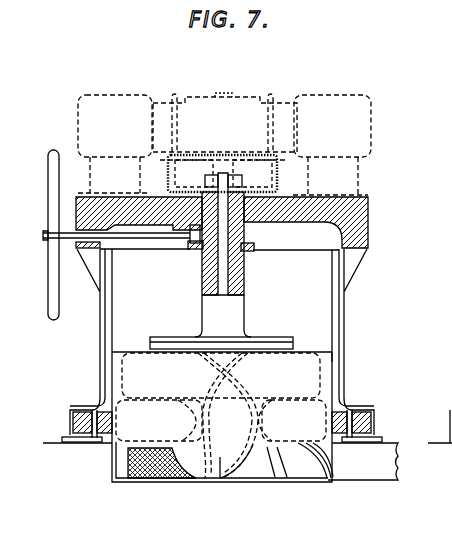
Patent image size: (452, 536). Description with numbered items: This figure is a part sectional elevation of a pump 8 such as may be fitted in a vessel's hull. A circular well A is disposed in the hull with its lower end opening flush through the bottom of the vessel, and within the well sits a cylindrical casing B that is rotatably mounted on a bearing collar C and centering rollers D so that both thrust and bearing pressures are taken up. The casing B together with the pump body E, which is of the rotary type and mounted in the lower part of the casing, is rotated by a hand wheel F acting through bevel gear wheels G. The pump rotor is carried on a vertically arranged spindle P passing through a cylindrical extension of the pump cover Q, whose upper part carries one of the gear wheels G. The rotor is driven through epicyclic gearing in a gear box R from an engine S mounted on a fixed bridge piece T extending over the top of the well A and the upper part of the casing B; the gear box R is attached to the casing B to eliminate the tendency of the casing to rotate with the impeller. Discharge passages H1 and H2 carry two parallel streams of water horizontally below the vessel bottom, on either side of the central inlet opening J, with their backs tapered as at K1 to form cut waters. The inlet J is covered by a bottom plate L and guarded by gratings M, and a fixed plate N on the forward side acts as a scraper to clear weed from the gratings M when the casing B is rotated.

The pump unit / ball member 8 is at (220, 93).
The engine S is at (364, 131).
The gear box R is at (185, 163).
The bearing collar C is at (262, 194).
The bridge piece T is at (368, 210).
The hand wheel F is at (55, 182).
The spindle P is at (202, 292).
The pump cover Q is at (205, 317).
The bevel gear wheels G is at (242, 247).
The cylindrical casing B is at (333, 302).
The well A is at (344, 327).
The pump body E is at (327, 376).
The discharge passage H1 is at (262, 366).
The discharge passage H2 is at (203, 358).
The centering rollers D is at (84, 408).
The bottom plate L is at (143, 479).
The cut water K1 is at (250, 470).
The inlet opening J is at (263, 426).
The gratings M is at (308, 474).
The plate N is at (353, 476).